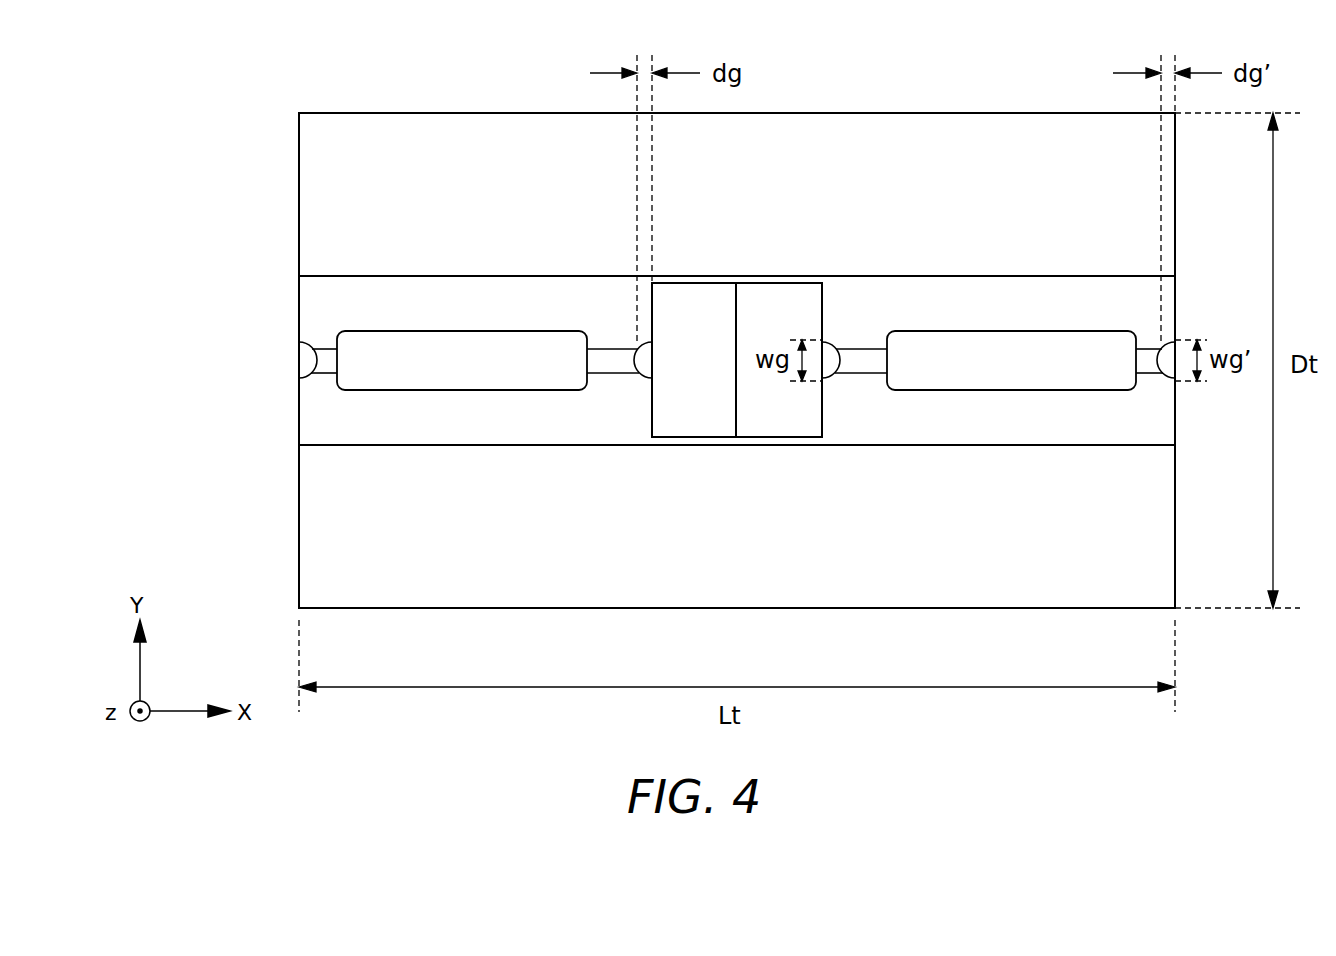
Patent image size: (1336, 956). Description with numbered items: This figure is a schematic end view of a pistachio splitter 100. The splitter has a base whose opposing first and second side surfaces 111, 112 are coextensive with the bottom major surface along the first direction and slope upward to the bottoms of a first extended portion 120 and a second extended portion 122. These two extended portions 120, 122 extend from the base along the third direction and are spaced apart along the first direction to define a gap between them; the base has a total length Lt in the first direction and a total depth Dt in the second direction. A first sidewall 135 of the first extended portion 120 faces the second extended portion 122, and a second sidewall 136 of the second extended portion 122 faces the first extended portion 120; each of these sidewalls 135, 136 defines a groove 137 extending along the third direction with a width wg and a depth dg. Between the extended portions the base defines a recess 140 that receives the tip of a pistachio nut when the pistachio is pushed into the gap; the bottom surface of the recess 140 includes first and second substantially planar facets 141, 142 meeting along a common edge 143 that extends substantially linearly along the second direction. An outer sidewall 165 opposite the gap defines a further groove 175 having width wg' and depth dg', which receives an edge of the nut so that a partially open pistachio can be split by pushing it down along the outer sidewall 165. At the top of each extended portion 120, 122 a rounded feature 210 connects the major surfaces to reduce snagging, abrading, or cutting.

The pistachio splitter 100 is at (175, 139).
The first side surface 111 is at (318, 538).
The second side surface 112 is at (325, 150).
The first extended portion 120 is at (395, 297).
The second extended portion 122 is at (948, 297).
The rounded feature 210 is at (501, 331).
The recess 140 is at (782, 315).
The first substantially planar facet 141 is at (670, 415).
The second substantially planar facet 142 is at (785, 415).
The common edge 143 is at (736, 400).
The first sidewall 135 is at (652, 415).
The second sidewall 136 is at (822, 415).
The groove 137 is at (636, 375).
The groove 175 is at (1170, 380).
The outer sidewall 165 is at (1175, 415).